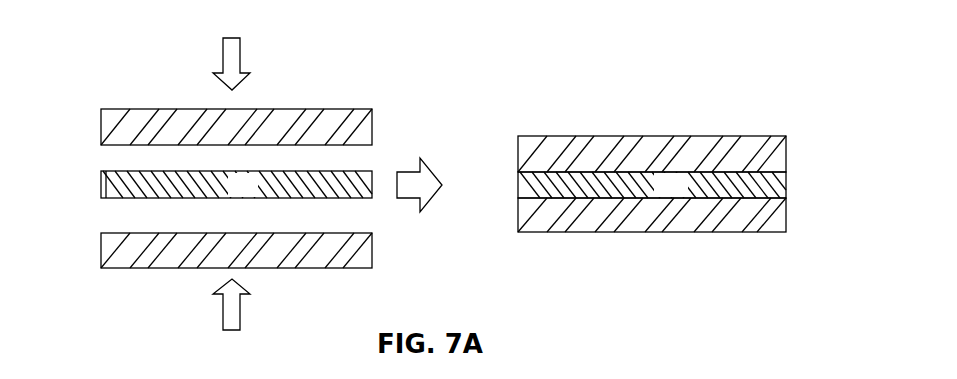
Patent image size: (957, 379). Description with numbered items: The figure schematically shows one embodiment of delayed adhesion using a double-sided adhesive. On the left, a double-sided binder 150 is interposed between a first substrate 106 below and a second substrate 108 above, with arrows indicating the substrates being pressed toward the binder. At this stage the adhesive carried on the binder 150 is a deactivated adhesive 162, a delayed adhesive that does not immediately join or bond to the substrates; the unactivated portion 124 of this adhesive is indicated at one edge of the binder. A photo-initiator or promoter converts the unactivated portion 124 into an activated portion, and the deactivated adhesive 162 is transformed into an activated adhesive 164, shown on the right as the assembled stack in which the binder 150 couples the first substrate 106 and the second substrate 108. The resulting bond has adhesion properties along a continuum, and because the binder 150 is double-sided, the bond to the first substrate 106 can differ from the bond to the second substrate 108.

The second substrate 108 is at (181, 112).
The binder 150 is at (101, 174).
The unactivated portion 124 is at (103, 192).
The first substrate 106 is at (130, 268).
The deactivated adhesive 162 is at (256, 192).
The activated adhesive 164 is at (686, 192).